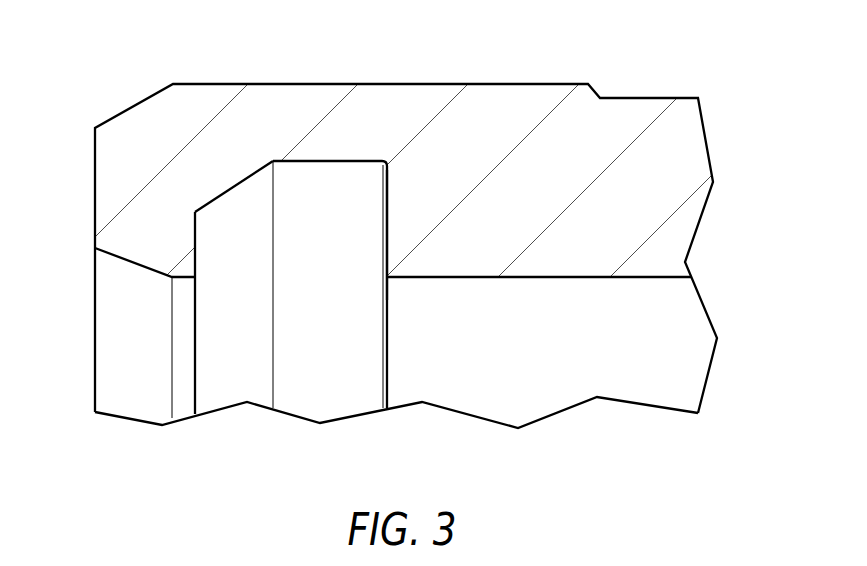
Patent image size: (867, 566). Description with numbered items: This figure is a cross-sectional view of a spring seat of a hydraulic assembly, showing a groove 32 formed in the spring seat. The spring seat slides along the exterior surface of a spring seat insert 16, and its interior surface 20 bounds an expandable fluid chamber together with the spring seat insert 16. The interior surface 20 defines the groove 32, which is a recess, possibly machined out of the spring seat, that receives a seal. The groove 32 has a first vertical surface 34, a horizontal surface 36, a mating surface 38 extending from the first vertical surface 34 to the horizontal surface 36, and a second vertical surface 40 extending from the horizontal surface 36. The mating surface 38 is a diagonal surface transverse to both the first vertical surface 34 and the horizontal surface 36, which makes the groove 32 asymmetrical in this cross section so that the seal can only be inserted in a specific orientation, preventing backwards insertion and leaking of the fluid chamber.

The spring seat insert 16 is at (522, 84).
The interior surface 20 is at (672, 352).
The groove 32 is at (360, 158).
The first vertical surface 34 is at (195, 237).
The horizontal surface 36 is at (322, 158).
The mating surface 38 is at (235, 184).
The second vertical surface 40 is at (388, 202).